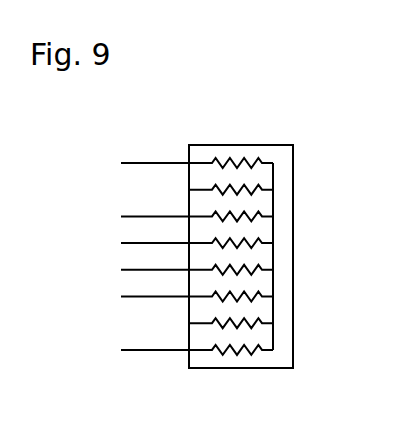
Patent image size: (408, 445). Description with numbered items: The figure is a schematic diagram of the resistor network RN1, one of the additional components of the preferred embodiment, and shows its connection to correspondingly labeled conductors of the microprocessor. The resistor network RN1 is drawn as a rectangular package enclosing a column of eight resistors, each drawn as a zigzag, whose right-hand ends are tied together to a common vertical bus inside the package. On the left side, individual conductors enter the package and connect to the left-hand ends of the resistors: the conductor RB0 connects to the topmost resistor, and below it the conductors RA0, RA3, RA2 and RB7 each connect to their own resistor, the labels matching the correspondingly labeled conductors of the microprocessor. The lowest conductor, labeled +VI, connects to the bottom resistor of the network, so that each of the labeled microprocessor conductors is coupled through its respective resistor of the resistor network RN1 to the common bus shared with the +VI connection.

The resistor network RN1 is at (241, 245).
The RB0 conductor RB0 is at (155, 152).
The RA0 conductor RA0 is at (155, 205).
The RA3 conductor RA3 is at (155, 232).
The RA2 conductor RA2 is at (155, 259).
The RB7 conductor RB7 is at (155, 285).
The +VI supply line VI is at (155, 338).